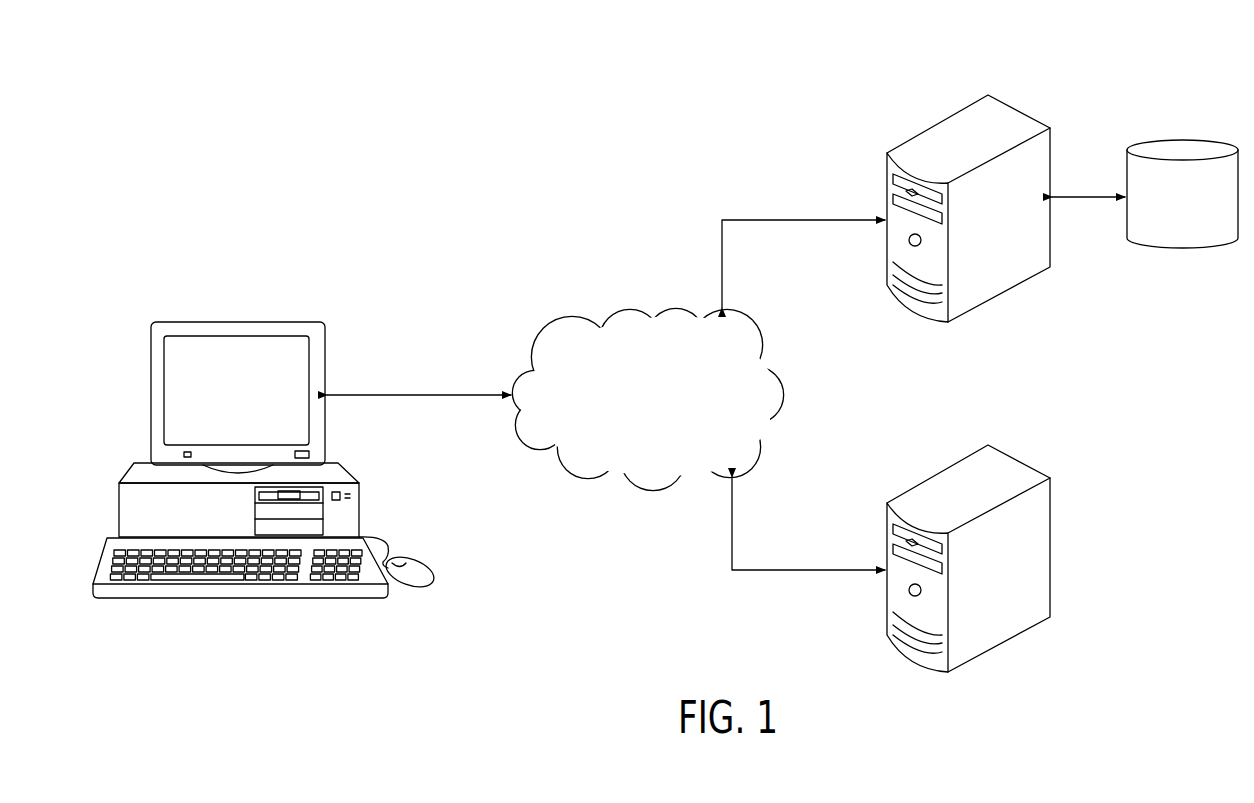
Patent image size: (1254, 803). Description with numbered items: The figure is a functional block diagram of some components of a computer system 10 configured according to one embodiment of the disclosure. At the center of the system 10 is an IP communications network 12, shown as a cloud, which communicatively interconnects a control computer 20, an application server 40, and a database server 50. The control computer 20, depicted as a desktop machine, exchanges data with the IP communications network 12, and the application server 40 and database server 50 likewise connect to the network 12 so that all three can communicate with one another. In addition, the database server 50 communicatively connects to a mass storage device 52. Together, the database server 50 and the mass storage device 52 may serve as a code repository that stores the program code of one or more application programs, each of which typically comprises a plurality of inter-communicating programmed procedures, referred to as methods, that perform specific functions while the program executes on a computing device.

The computer system 10 is at (290, 157).
The IP communications network 12 is at (580, 325).
The control computer 20 is at (167, 307).
The application server 40 is at (1035, 460).
The database server 50 is at (1022, 100).
The mass storage device 52 is at (1182, 137).